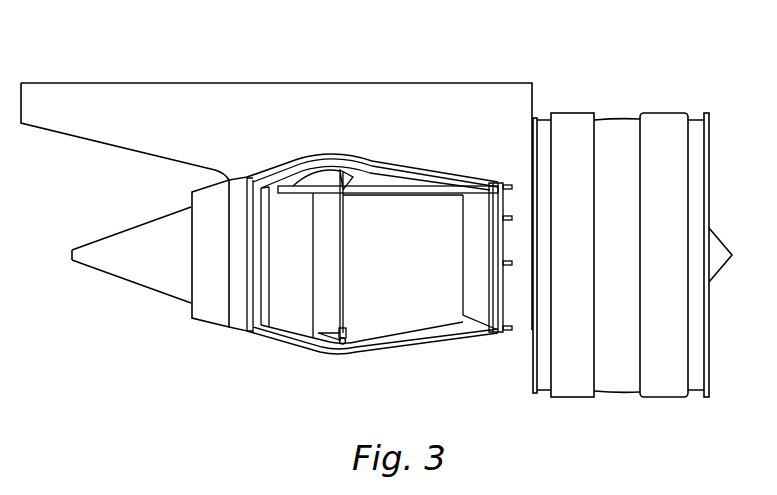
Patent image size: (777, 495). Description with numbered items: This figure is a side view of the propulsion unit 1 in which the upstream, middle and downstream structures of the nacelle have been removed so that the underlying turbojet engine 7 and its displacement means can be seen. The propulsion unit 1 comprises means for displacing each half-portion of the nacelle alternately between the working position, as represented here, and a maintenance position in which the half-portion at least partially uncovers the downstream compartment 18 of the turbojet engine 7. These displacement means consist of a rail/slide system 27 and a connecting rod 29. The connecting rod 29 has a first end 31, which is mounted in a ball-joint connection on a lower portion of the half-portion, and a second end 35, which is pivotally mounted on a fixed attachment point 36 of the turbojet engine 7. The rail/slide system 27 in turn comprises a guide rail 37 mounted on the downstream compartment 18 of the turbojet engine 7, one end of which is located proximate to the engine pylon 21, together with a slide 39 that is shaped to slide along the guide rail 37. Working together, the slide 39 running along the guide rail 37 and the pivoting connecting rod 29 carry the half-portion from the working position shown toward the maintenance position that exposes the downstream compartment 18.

The propulsion unit 1 is at (580, 65).
The turbojet engine 7 is at (213, 302).
The downstream compartment 18 is at (400, 293).
The engine pylon 21 is at (278, 121).
The rail/slide system 27 is at (420, 188).
The connecting rod 29 is at (363, 352).
The first end 31 is at (460, 335).
The second end 35 is at (340, 338).
The fixed attachment point 36 is at (342, 343).
The guide rail 37 is at (355, 188).
The slide 39 is at (493, 185).